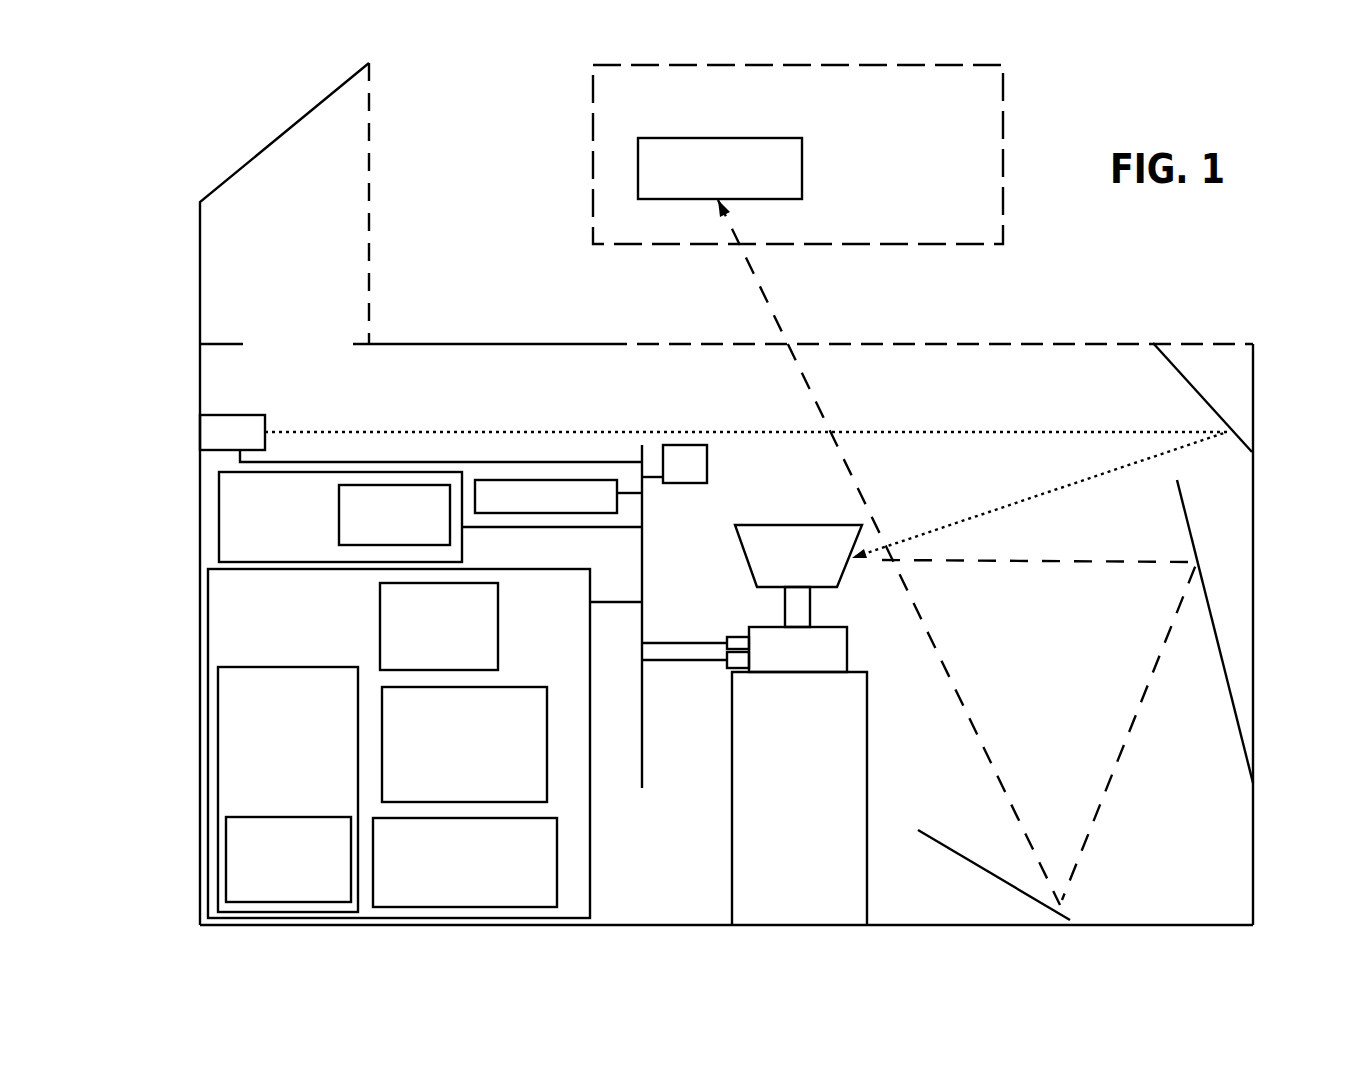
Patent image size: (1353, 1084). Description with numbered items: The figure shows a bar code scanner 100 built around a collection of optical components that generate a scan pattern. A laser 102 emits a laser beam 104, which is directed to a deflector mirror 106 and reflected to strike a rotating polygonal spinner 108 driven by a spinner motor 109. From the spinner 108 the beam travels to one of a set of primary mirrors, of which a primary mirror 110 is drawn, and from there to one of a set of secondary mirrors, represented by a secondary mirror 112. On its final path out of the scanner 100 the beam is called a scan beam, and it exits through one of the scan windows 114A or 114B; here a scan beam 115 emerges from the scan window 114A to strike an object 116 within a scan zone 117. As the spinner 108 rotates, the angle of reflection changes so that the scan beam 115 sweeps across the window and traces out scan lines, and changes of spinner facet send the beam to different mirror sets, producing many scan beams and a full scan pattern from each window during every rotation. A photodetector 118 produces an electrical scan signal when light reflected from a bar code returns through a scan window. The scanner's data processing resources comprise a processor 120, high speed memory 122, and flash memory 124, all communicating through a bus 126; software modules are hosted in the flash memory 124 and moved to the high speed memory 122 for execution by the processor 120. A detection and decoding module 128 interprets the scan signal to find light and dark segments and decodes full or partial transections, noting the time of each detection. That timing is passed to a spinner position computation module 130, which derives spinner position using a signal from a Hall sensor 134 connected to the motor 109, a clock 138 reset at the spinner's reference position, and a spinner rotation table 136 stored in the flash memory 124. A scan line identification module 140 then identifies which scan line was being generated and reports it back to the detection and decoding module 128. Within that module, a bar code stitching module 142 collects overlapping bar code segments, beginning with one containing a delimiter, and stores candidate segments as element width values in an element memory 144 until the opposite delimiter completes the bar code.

The bar code scanner 100 is at (234, 99).
The laser 102 is at (236, 415).
The laser beam 104 is at (970, 432).
The deflector mirror 106 is at (1208, 400).
The rotating polygonal spinner 108 is at (777, 525).
The spinner motor 109 is at (818, 664).
The primary mirror 110 is at (965, 860).
The secondary mirror 112 is at (1228, 698).
The scan window 114A is at (667, 344).
The scan window 114B is at (372, 185).
The scan beam 115 is at (769, 303).
The object 116 is at (736, 138).
The scan zone 117 is at (593, 103).
The photodetector 118 is at (707, 462).
The processor 120 is at (617, 504).
The high speed memory 122 is at (219, 494).
The flash memory 124 is at (590, 587).
The bus 126 is at (644, 553).
The detection and decoding module 128 is at (290, 667).
The spinner position computation module 130 is at (520, 687).
The Hall sensor 134 is at (733, 637).
The spinner rotation table 136 is at (498, 608).
The clock 138 is at (727, 668).
The scan line identification module 140 is at (557, 860).
The bar code stitching module 142 is at (305, 817).
The element memory 144 is at (450, 534).